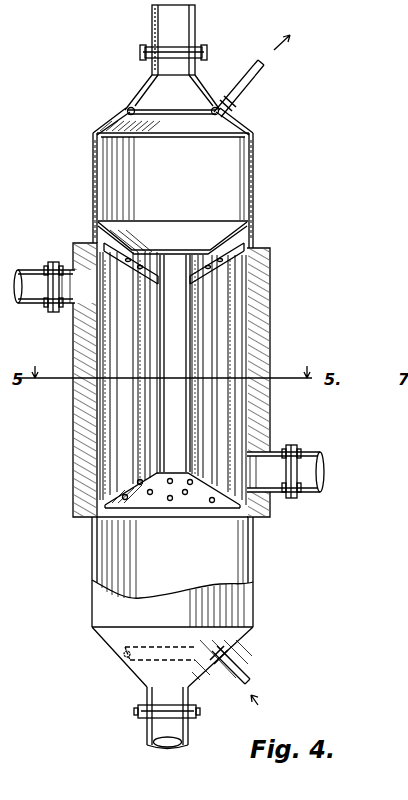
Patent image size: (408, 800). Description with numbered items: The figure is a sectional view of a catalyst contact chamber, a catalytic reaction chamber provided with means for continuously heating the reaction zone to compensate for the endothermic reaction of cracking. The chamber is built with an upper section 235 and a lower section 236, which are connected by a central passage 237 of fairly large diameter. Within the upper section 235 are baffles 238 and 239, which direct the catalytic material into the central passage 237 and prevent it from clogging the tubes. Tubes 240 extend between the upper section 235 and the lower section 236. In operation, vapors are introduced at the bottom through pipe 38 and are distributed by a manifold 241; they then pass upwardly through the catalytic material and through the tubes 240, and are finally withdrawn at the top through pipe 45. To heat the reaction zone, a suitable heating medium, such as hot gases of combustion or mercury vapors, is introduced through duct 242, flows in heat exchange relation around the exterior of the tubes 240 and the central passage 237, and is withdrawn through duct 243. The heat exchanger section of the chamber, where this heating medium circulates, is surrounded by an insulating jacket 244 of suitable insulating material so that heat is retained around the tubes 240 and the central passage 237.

The upper section 235 is at (253, 186).
The lower section 236 is at (253, 565).
The central passage 237 is at (190, 331).
The baffle 238 is at (250, 226).
The baffle 239 is at (250, 243).
The tubes 240 is at (240, 369).
The manifold 241 is at (126, 660).
The duct 242 is at (38, 308).
The duct 243 is at (308, 456).
The insulating jacket 244 is at (270, 406).
The pipe 45 is at (250, 72).
The pipe 38 is at (242, 678).